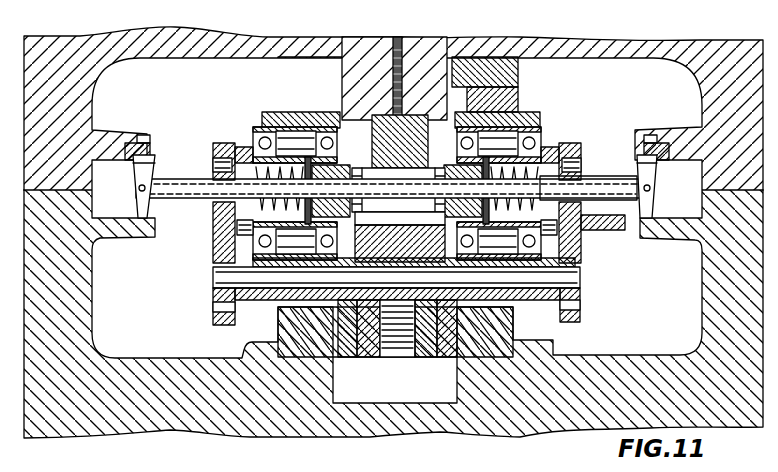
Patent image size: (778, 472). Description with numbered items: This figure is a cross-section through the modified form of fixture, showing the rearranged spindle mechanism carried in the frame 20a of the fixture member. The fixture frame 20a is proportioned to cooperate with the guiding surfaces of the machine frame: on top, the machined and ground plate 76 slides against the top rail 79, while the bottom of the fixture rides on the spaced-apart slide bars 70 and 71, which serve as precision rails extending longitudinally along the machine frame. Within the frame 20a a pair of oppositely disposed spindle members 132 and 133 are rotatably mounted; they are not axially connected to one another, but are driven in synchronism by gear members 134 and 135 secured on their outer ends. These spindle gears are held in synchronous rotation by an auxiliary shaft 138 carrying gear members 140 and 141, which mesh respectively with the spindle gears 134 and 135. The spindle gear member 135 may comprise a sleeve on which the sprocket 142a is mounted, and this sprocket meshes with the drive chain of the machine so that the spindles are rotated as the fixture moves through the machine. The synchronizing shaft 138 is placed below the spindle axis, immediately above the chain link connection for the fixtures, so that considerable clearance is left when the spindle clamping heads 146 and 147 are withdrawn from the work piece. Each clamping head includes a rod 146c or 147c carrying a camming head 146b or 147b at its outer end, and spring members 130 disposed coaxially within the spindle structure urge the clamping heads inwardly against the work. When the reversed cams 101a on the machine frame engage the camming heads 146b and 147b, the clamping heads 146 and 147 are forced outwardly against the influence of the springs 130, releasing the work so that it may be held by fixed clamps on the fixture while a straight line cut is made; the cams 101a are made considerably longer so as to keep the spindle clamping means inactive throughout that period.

The plate 76 is at (300, 72).
The rail 79 is at (470, 70).
The slide bar 70 is at (300, 345).
The slide bar 71 is at (487, 345).
The frame of the fixture member 20a is at (254, 112).
The spring members 130 is at (250, 127).
The spindle member 132 is at (215, 205).
The spindle member 133 is at (596, 215).
The gear member 134 is at (205, 128).
The spindle gear member 135 is at (580, 140).
The auxiliary shaft 138 is at (213, 276).
The gear member 140 is at (220, 303).
The gear member 141 is at (580, 310).
The sprocket 142a is at (624, 230).
The spindle clamping head 146 is at (362, 147).
The camming head 146b is at (148, 135).
The rod 146c is at (196, 180).
The spindle clamping head 147 is at (449, 162).
The camming head 147b is at (680, 110).
The rod 147c is at (611, 222).
The cam 101a is at (138, 213).